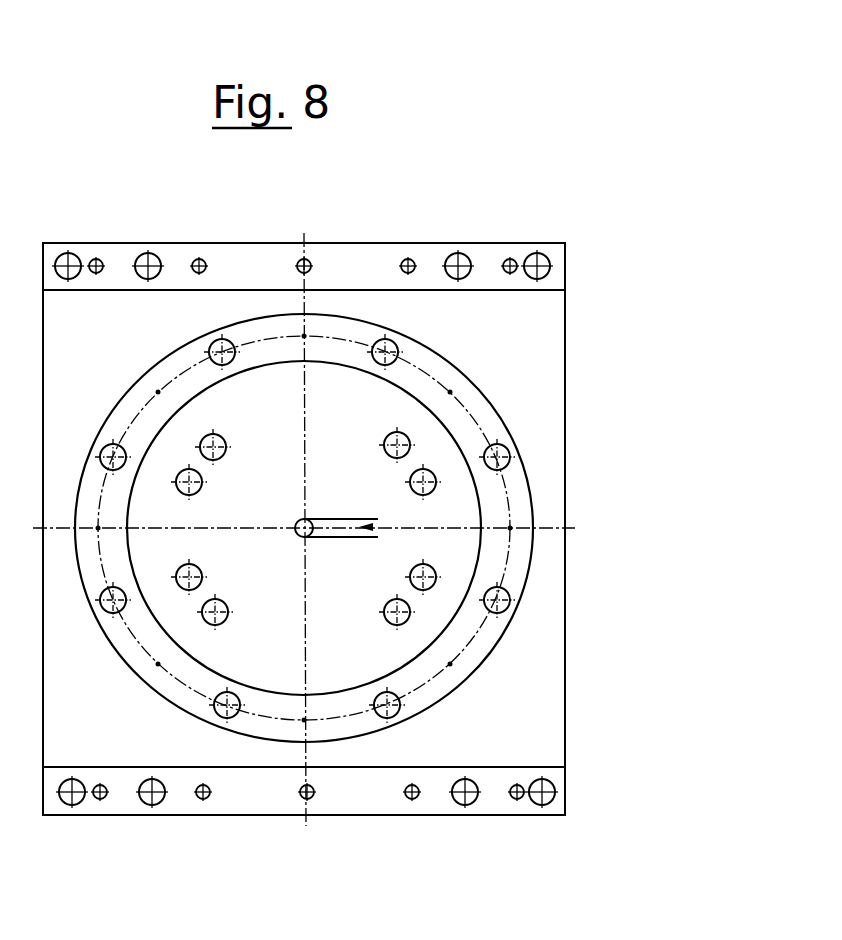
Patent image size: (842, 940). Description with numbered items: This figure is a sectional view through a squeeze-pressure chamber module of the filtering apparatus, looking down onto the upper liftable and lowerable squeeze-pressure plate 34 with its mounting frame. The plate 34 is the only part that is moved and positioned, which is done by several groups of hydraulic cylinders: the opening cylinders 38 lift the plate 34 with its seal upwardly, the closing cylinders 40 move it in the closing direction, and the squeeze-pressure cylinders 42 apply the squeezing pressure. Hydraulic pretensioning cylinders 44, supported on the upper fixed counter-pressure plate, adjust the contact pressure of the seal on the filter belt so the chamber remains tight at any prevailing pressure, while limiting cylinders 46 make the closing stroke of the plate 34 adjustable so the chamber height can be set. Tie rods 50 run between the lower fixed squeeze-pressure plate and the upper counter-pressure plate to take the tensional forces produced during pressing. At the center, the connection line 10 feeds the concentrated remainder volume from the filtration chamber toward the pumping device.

The connection line 10 is at (330, 522).
The upper liftable and lowerable squeeze-pressure plate 34 is at (455, 510).
The opening cylinders 38 is at (541, 259).
The closing cylinders 40 is at (436, 576).
The squeeze-pressure cylinders 42 is at (405, 439).
The hydraulic pretensioning cylinders 44 is at (511, 452).
The limiting cylinders 46 is at (454, 265).
The tie rods 50 is at (412, 795).